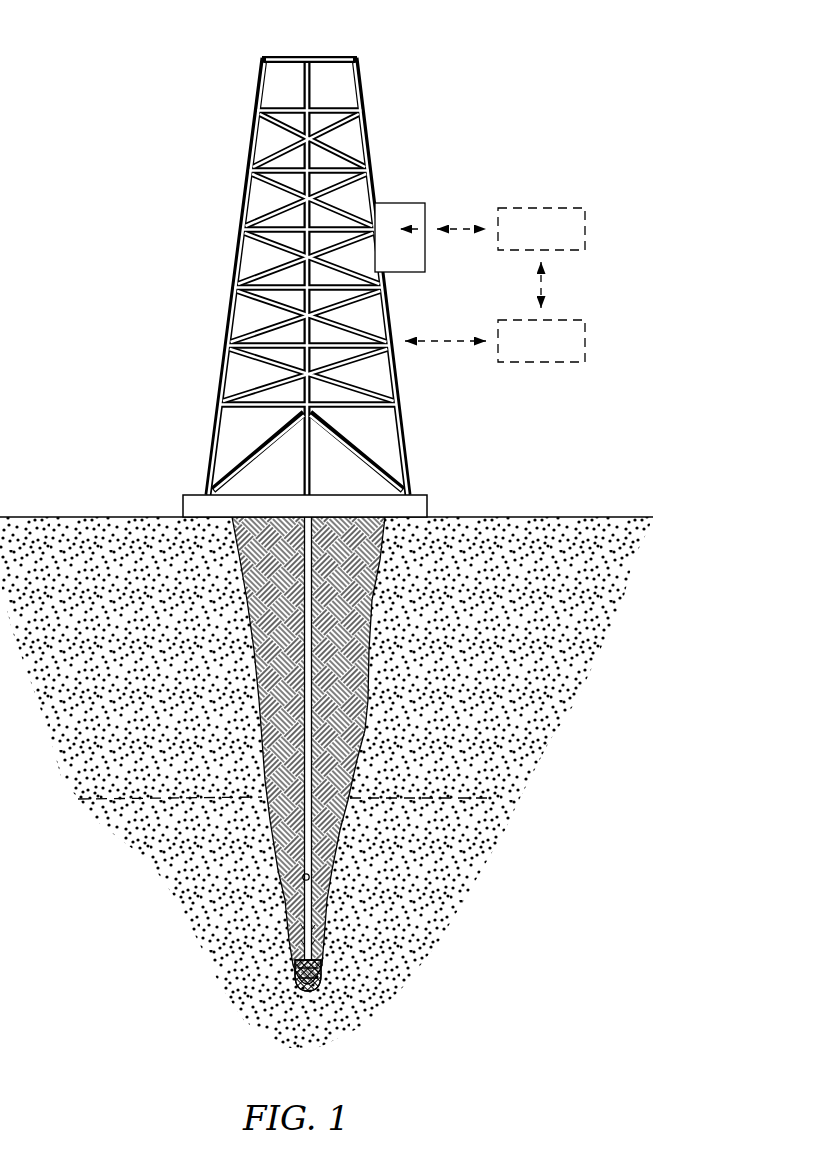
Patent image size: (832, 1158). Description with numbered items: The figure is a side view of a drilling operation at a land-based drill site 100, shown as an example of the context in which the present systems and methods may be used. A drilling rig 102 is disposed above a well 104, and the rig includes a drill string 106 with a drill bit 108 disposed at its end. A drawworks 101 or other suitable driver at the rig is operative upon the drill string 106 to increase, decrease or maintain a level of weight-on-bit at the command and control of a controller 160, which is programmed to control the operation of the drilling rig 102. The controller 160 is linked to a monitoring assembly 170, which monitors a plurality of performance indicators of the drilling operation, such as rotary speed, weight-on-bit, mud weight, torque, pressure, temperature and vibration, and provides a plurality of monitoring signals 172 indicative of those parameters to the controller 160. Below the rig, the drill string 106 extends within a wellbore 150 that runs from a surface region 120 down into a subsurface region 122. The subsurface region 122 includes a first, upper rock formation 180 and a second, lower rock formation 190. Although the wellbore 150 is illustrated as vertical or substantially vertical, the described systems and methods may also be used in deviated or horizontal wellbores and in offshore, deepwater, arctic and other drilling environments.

The drill site 100 is at (190, 44).
The drawworks 101 is at (418, 207).
The drilling rig 102 is at (375, 171).
The well 104 is at (380, 562).
The drill string 106 is at (322, 711).
The drill bit 108 is at (318, 977).
The surface region 120 is at (131, 301).
The subsurface region 122 is at (115, 694).
The wellbore 150 is at (302, 878).
The controller 160 is at (511, 229).
The monitoring assembly 170 is at (495, 341).
The monitoring signals 172 is at (548, 289).
The first (upper) rock formation 180 is at (593, 565).
The second (lower) rock formation 190 is at (425, 842).